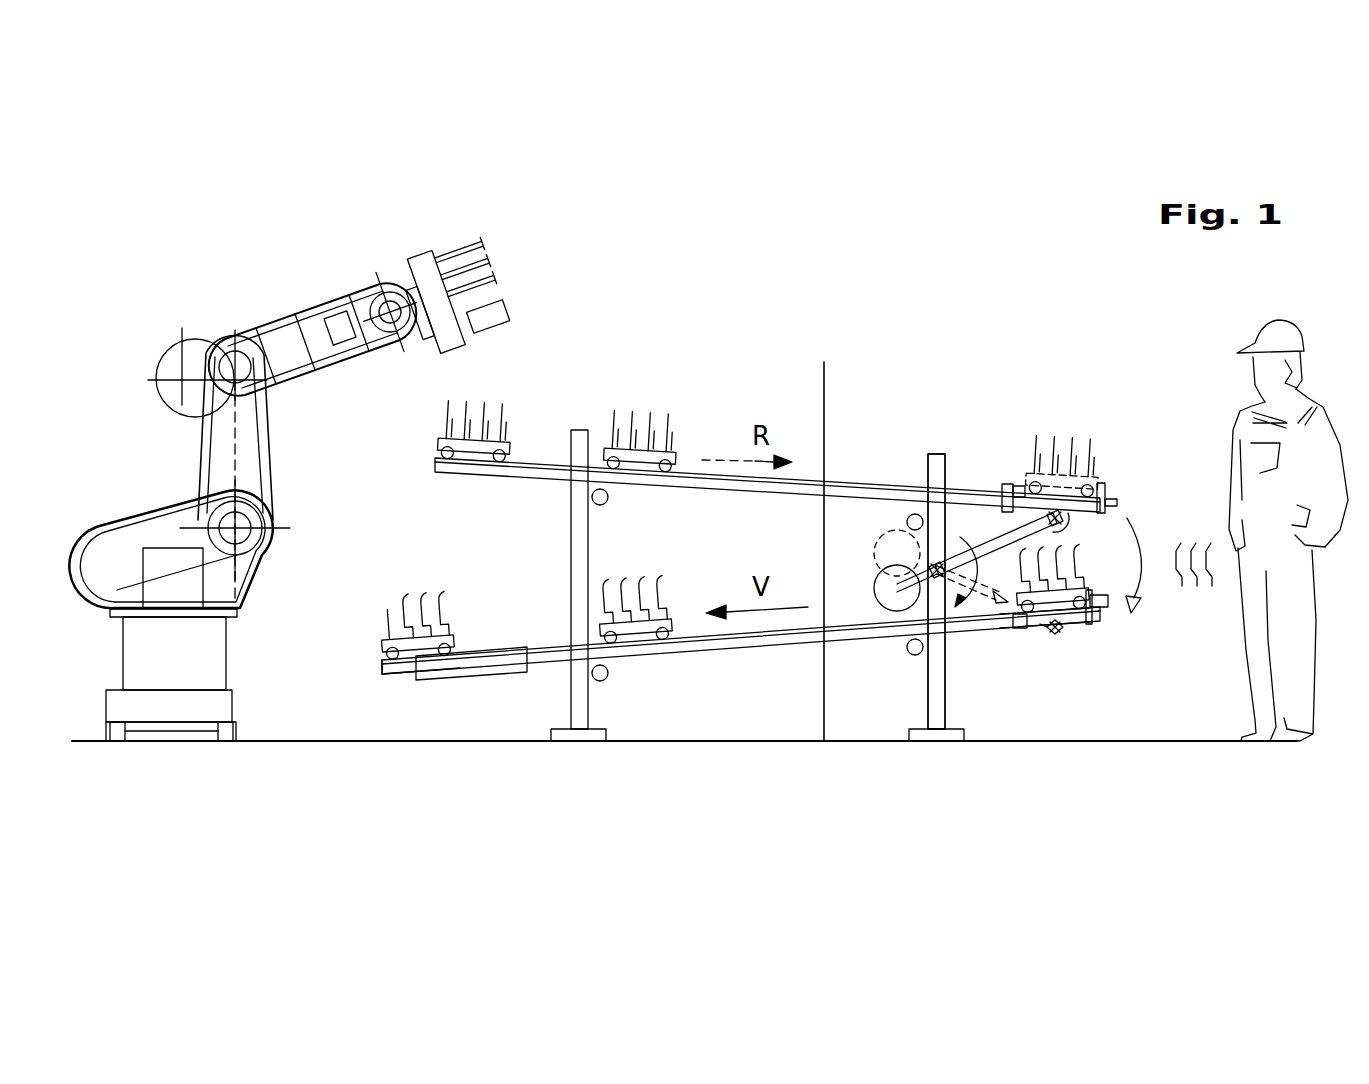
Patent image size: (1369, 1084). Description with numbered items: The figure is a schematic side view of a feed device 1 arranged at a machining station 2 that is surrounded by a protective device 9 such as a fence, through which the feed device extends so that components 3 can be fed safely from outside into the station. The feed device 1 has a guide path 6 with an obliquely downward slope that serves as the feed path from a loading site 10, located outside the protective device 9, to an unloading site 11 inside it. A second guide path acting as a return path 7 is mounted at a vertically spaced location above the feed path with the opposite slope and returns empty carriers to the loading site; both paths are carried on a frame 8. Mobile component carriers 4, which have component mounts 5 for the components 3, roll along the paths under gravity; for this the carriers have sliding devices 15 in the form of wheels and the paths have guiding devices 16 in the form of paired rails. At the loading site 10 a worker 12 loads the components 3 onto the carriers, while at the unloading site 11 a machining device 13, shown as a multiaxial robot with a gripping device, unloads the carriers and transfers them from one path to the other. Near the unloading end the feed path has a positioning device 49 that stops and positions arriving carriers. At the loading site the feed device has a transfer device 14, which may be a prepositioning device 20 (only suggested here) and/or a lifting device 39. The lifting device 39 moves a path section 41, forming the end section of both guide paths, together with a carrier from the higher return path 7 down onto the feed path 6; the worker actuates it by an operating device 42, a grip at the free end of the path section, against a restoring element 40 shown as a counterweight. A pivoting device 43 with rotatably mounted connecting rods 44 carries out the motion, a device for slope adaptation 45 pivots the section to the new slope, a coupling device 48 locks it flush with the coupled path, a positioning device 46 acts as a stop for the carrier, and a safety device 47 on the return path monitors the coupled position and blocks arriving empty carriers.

The feed device 1 is at (557, 764).
The machining station 2 is at (290, 505).
The components 3 is at (642, 582).
The mobile component carriers 4 is at (475, 447).
The component mounts 5 is at (630, 430).
The guide path 6 is at (765, 640).
The return path 7 is at (540, 472).
The frame 8 is at (937, 712).
The protective device 9 is at (822, 432).
The loading site 10 is at (1145, 460).
The unloading site 11 is at (376, 700).
The worker 12 is at (1290, 663).
The machining device 13 is at (193, 647).
The transfer device 14 is at (1128, 708).
The sliding devices 15 is at (447, 655).
The guiding devices 16 is at (555, 465).
The prepositioning device 20 is at (1128, 708).
The lifting device 39 is at (1109, 648).
The restoring element 40 is at (898, 588).
The path section 41 is at (1025, 618).
The operating device 42 is at (1117, 500).
The pivoting device 43 is at (977, 509).
The connecting rods 44 is at (983, 550).
The device for slope adaptation 45 is at (1058, 655).
The positioning device 46 is at (1100, 495).
The safety device 47 is at (1008, 485).
The coupling device 48 is at (1015, 497).
The positioning device 49 is at (490, 675).